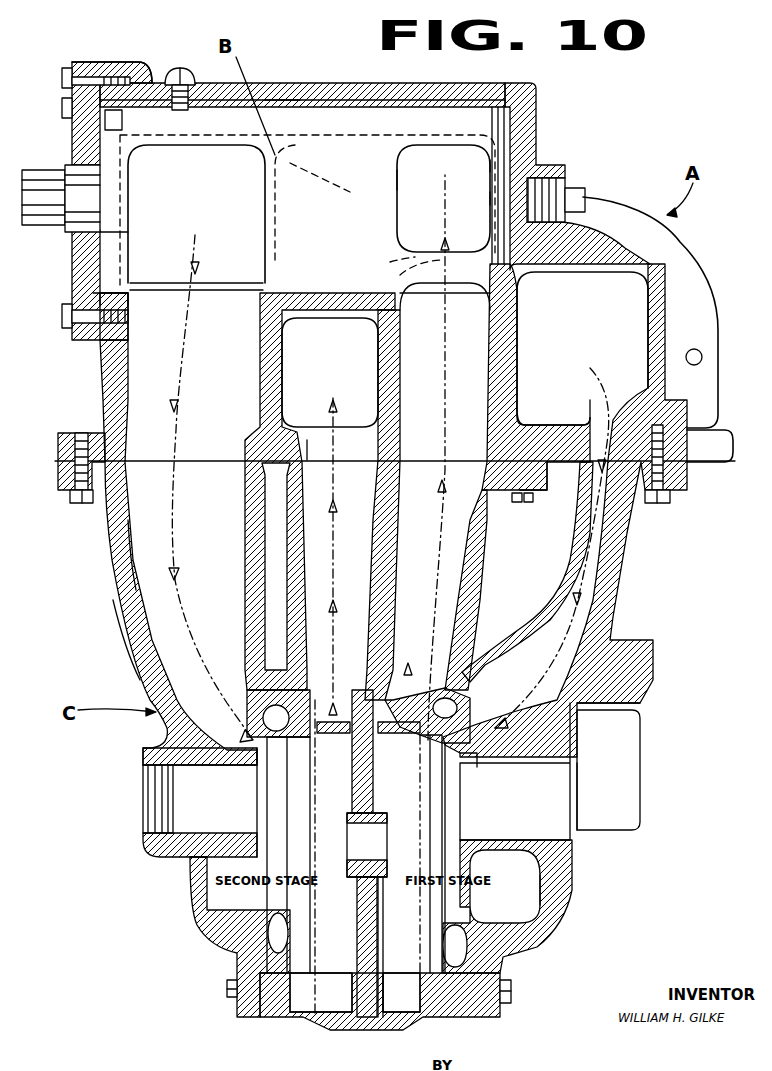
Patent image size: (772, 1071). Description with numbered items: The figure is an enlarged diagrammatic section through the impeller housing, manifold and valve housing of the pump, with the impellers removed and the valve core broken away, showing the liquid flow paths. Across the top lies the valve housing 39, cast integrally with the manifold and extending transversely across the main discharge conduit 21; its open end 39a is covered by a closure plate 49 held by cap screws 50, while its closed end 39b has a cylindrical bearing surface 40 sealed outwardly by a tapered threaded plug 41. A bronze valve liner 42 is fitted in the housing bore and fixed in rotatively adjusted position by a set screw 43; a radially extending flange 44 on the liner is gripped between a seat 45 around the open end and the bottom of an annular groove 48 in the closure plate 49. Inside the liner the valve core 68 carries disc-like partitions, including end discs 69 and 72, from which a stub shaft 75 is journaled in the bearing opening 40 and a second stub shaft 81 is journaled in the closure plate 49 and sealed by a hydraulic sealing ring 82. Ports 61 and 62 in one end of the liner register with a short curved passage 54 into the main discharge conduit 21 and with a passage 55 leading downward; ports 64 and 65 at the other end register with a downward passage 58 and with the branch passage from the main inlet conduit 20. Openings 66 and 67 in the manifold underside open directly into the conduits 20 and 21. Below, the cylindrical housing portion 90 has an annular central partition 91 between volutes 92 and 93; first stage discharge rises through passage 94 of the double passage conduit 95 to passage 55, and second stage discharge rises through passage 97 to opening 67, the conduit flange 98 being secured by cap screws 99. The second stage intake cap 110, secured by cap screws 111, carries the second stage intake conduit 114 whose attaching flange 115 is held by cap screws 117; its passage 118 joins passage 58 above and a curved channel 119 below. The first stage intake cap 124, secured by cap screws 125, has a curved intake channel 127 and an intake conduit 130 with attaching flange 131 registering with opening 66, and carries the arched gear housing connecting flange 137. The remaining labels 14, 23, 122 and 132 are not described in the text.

The passage 14 is at (458, 58).
The main inlet conduit 20 is at (633, 312).
The main discharge conduit 21 is at (317, 392).
The outer shell 23 is at (693, 272).
The valve housing 39 is at (310, 85).
The open end of valve housing 39a is at (117, 64).
The closed end of valve housing 39b is at (527, 122).
The cylindrical bearing surface 40 is at (563, 160).
The tapered threaded plug 41 is at (577, 192).
The valve liner 42 is at (282, 83).
The set screw 43 is at (180, 72).
The radially extending flange 44 is at (128, 305).
The seat 45 is at (127, 330).
The annular groove 48 is at (93, 297).
The closure plate 49 is at (82, 140).
The cap screws 50 is at (62, 112).
The short curved passage 54 is at (430, 198).
The passage 55 is at (490, 371).
The passage 58 is at (125, 368).
The port 61 is at (410, 180).
The port 62 is at (420, 283).
The port 64 is at (263, 269).
The port 65 is at (277, 205).
The opening 66 is at (627, 415).
The opening 67 is at (310, 447).
The valve core 68 is at (124, 120).
The disc-like partition 69 is at (112, 170).
The disc-like partition 72 is at (500, 166).
The stub shaft 75 is at (507, 198).
The stub shaft 81 is at (61, 198).
The hydraulic sealing ring 82 is at (100, 237).
The cylindrical housing portion 90 is at (320, 1017).
The annular central partition 91 is at (370, 773).
The volute 92 is at (398, 985).
The volute 93 is at (340, 977).
The passage 94 is at (470, 570).
The double passage conduit 95 is at (493, 563).
The passage 97 is at (302, 551).
The flange 98 is at (540, 472).
The cap screws 99 is at (533, 498).
The second stage intake cap 110 is at (195, 895).
The cap screws 111 is at (227, 990).
The second stage intake conduit 114 is at (137, 645).
The attaching flange 115 is at (60, 477).
The cap screws 117 is at (77, 497).
The passage 118 is at (128, 552).
The curved channel 119 is at (203, 868).
The flange 122 is at (157, 757).
The first stage intake cap 124 is at (560, 900).
The cap screws 125 is at (513, 990).
The curved intake channel 127 is at (533, 880).
The intake conduit 130 is at (620, 578).
The attaching flange 131 is at (680, 483).
The housing 132 is at (530, 752).
The gear housing connecting flange 137 is at (633, 692).